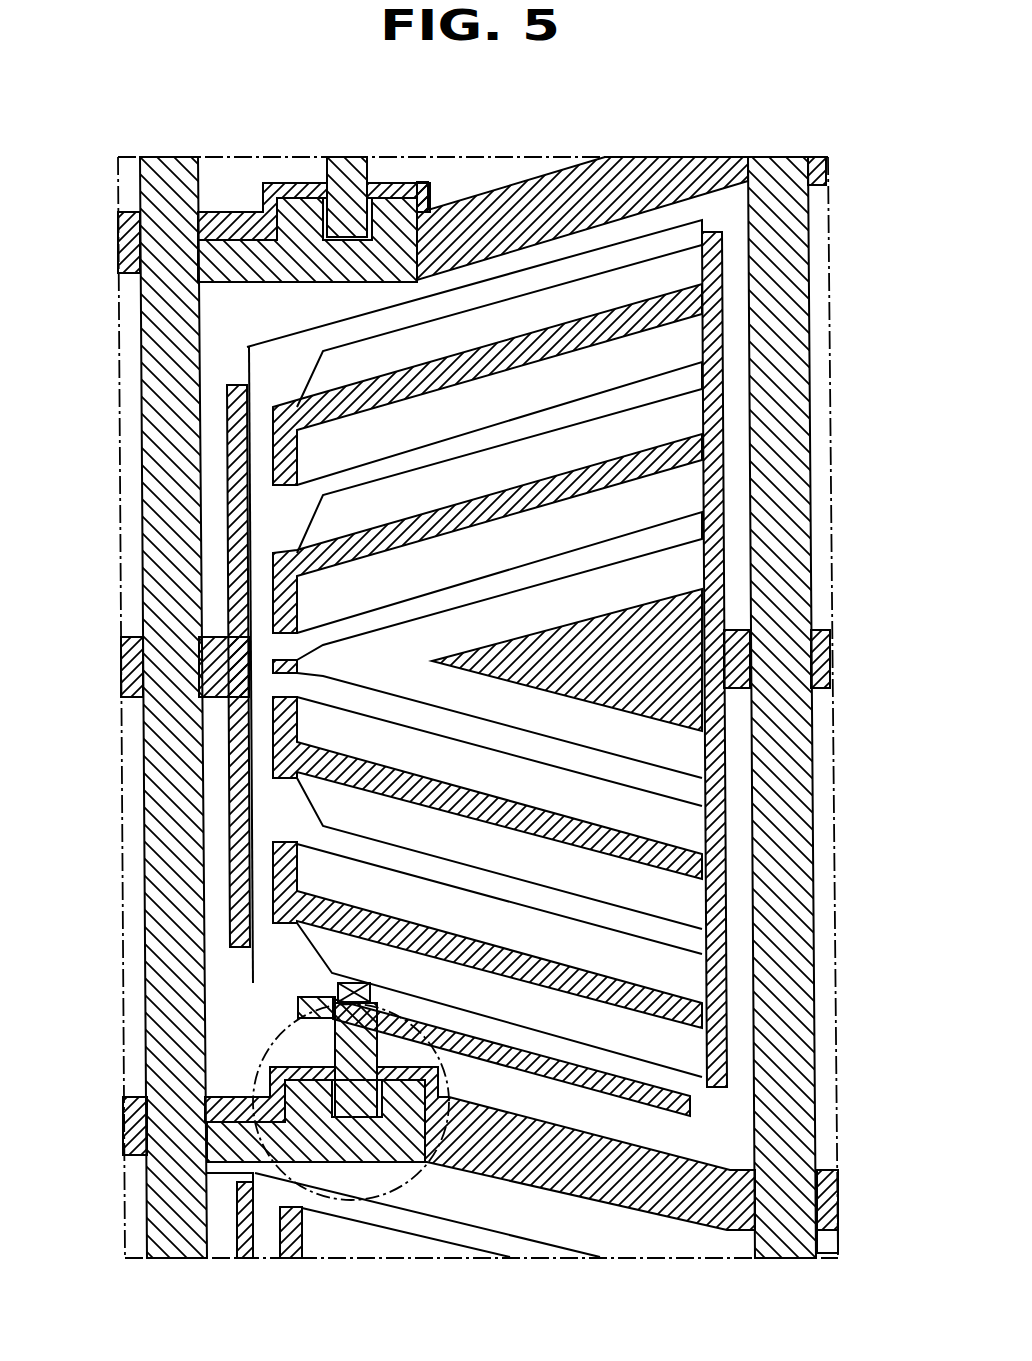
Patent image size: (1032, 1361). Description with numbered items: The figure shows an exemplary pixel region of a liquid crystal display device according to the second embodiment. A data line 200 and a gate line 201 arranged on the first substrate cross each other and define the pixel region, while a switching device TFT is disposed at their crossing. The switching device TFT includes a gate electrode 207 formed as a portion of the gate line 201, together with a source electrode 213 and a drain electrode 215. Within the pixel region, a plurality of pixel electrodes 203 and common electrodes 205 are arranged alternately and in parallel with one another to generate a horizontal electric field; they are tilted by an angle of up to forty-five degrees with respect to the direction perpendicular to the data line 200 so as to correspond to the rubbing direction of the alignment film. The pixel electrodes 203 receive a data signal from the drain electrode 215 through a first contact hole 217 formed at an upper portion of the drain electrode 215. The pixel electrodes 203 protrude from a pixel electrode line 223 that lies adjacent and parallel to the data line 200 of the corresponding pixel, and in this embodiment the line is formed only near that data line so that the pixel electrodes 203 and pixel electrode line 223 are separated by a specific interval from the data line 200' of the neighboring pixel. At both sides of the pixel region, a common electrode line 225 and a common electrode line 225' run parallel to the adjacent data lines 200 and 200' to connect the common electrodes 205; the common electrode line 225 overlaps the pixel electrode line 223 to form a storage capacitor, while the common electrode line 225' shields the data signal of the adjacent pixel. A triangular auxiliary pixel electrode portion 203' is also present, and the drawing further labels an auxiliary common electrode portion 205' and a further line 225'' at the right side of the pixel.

The data line 200 is at (126, 707).
The data line of a neighbor pixel 200' is at (835, 707).
The gate line 201 is at (840, 1202).
The pixel electrode 203 is at (577, 440).
The triangular auxiliary pixel electrode portion 203' is at (608, 875).
The common electrode 205 is at (590, 441).
The common electrode 205' is at (596, 906).
The gate electrode 207 is at (307, 1133).
The source electrode 213 is at (407, 1110).
The drain electrode 215 is at (367, 1143).
The first contact hole 217 is at (338, 985).
The pixel electrode line 223 is at (258, 744).
The common electrode line 225 is at (150, 666).
The common electrode line 225' is at (811, 659).
The alignment layer 225'' is at (826, 659).
The switching device TFT is at (262, 1060).